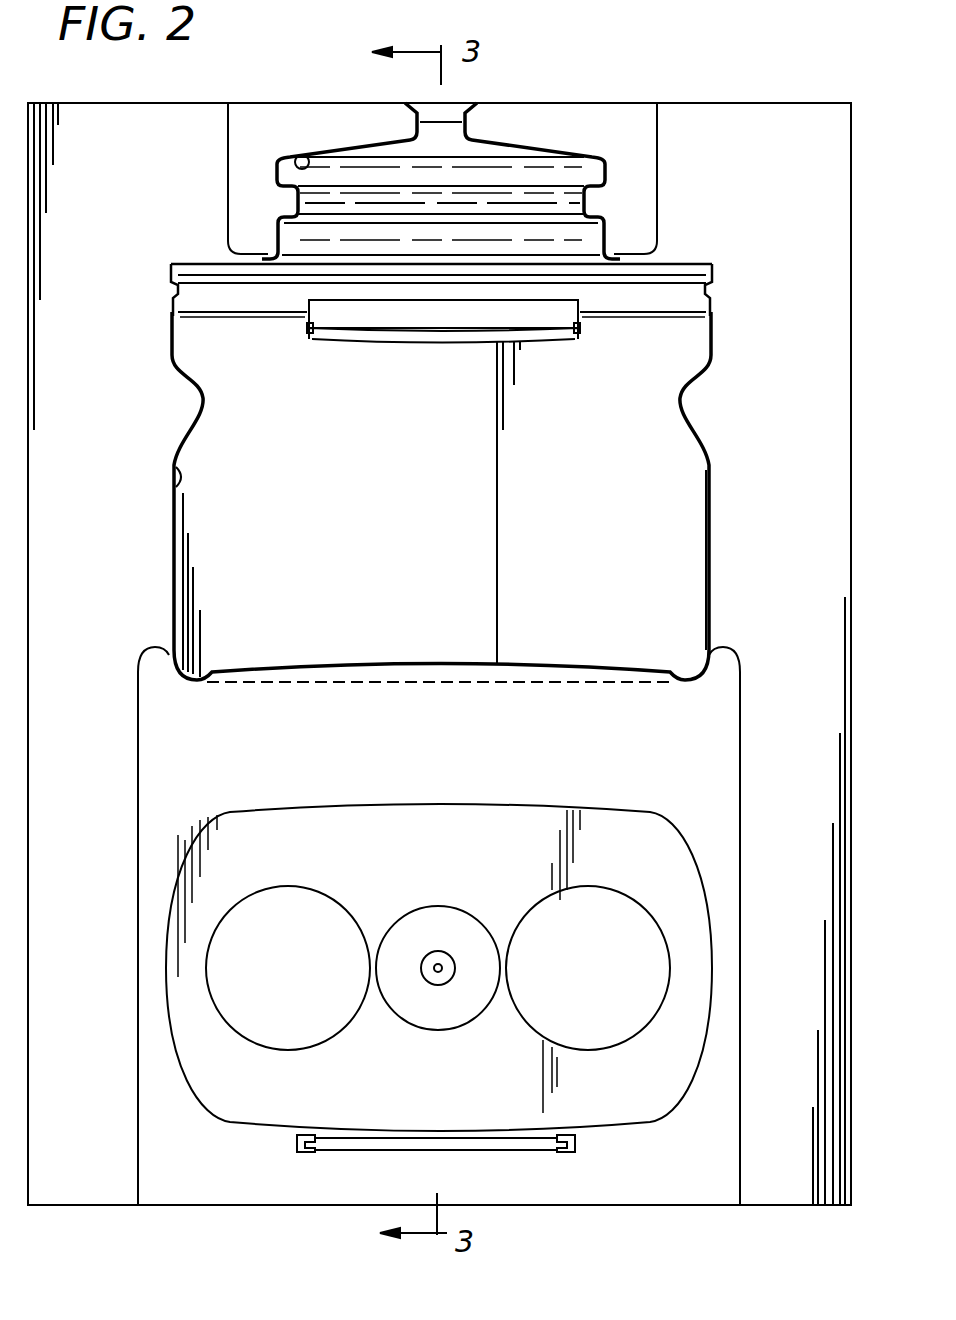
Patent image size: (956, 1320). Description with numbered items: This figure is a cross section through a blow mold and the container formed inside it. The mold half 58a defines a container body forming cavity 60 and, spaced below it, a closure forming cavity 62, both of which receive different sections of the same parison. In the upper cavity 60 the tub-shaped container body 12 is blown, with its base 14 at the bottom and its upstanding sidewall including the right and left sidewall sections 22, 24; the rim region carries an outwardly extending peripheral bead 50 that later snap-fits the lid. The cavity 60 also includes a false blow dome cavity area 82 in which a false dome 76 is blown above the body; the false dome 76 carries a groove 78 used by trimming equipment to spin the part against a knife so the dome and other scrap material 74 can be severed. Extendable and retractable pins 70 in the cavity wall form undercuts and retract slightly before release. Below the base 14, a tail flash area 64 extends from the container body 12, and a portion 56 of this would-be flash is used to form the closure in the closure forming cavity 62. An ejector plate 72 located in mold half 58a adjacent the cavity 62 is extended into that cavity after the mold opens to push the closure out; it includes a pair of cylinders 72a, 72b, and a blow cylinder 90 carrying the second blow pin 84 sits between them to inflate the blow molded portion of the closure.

The container body 12 is at (712, 537).
The base 14 is at (466, 668).
The right sidewall section 22 is at (168, 498).
The left sidewall section 24 is at (712, 593).
The peripheral bead 50 is at (715, 297).
The portion of flash material 56 is at (732, 735).
The mold half 58a is at (706, 125).
The container body forming cavity 60 is at (178, 467).
The closure forming cavity 62 is at (685, 892).
The tail flash area 64 is at (155, 752).
The extendable/retractable pins 70 is at (308, 330).
The ejector plate 72 is at (438, 977).
The ejector plate cylinder 72a is at (312, 912).
The ejector plate cylinder 72b is at (592, 905).
The scrap material 74 is at (725, 1032).
The false dome 76 is at (535, 140).
The groove 78 is at (588, 207).
The false blow dome cavity area 82 is at (305, 160).
The second blow pin 84 is at (440, 975).
The blow cylinder 90 is at (445, 928).